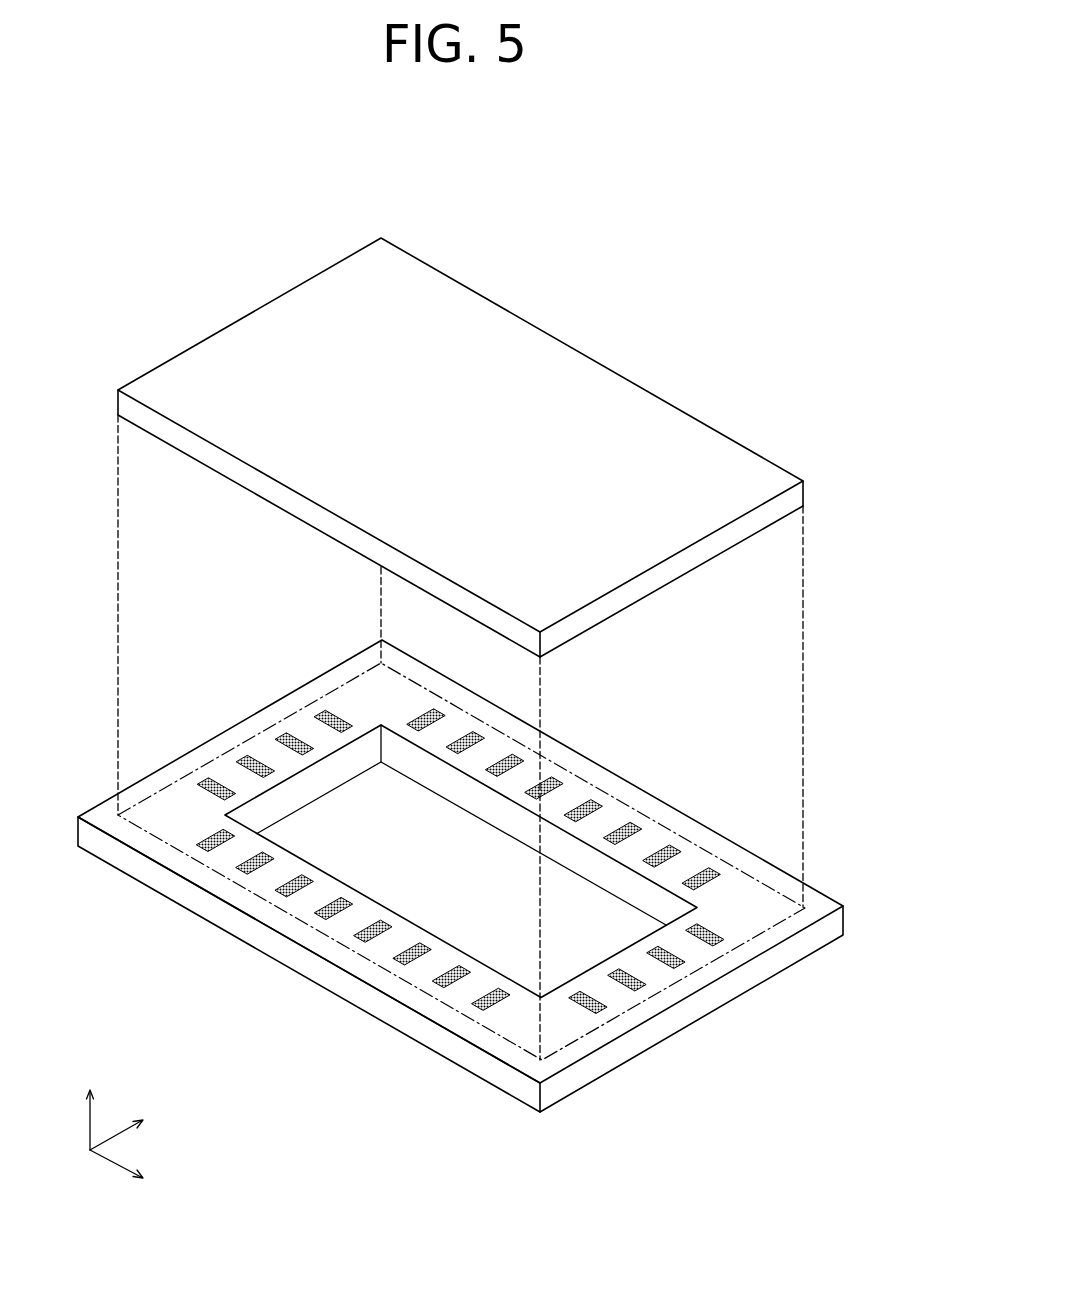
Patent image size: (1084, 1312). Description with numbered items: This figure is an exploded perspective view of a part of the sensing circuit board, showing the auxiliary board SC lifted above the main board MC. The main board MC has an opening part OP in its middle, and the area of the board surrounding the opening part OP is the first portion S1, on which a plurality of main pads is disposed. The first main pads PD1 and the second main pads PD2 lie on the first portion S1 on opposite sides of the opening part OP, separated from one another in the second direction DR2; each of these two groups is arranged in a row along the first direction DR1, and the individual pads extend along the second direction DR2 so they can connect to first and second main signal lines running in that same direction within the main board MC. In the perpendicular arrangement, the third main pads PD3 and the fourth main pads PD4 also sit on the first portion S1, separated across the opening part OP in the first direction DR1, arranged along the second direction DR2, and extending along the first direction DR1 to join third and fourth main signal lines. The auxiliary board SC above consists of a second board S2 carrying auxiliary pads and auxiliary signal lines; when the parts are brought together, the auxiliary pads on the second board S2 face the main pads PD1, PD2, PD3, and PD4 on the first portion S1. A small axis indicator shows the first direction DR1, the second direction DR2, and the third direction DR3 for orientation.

The auxiliary board SC is at (503, 649).
The second board S2 is at (598, 383).
The main board MC is at (502, 876).
The first portion S1 is at (230, 935).
The opening part OP is at (418, 903).
The first main pads PD1 is at (490, 996).
The second main pads PD2 is at (673, 852).
The third main pads PD3 is at (210, 780).
The fourth main pads PD4 is at (633, 982).
The first direction DR1 is at (141, 1176).
The second direction DR2 is at (141, 1125).
The third direction DR3 is at (89, 1106).